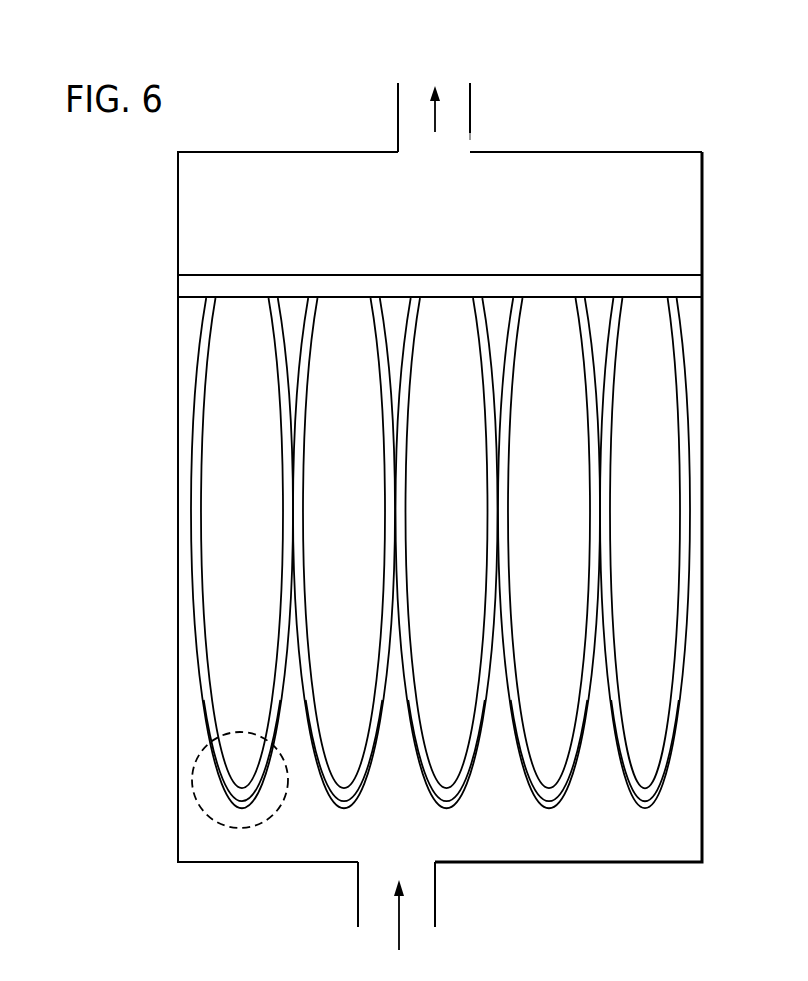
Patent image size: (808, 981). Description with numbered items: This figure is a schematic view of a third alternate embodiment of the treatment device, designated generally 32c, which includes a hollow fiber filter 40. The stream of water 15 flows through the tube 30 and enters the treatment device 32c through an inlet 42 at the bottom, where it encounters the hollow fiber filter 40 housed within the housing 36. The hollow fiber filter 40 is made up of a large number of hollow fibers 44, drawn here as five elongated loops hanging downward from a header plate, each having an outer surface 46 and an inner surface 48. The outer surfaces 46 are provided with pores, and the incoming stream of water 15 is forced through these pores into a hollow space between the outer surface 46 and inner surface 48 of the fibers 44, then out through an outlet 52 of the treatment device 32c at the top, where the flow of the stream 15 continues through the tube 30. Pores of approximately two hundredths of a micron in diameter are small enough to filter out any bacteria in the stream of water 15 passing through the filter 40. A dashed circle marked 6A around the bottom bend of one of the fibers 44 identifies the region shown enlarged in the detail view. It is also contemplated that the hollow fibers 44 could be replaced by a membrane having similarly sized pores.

The treatment device 32c is at (122, 288).
The housing 36 is at (703, 217).
The tube 30 is at (472, 92).
The outlet 52 is at (470, 148).
The inlet 42 is at (356, 870).
The stream of water 15 is at (397, 110).
The hollow fiber filter 40 is at (692, 475).
The outer surface 46 is at (677, 320).
The inner surface 48 is at (670, 358).
The hollow fibers 44 is at (247, 808).
The detail circle 6A is at (217, 822).